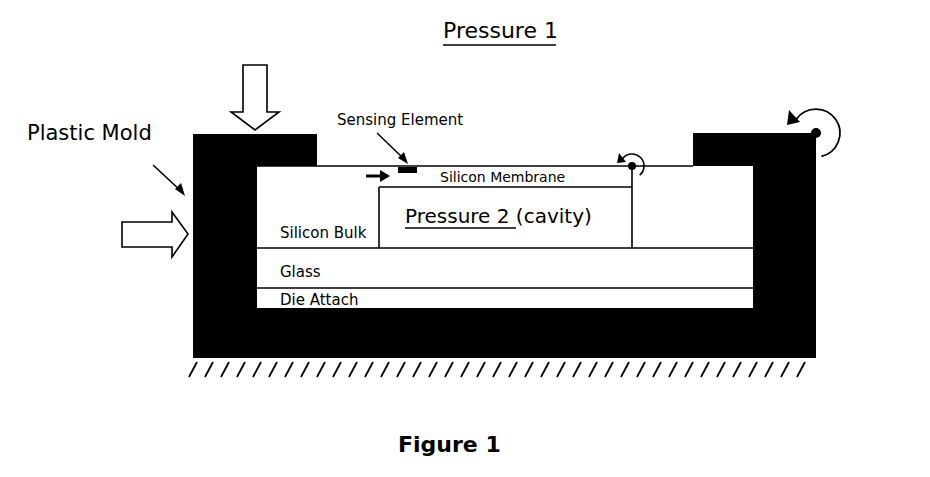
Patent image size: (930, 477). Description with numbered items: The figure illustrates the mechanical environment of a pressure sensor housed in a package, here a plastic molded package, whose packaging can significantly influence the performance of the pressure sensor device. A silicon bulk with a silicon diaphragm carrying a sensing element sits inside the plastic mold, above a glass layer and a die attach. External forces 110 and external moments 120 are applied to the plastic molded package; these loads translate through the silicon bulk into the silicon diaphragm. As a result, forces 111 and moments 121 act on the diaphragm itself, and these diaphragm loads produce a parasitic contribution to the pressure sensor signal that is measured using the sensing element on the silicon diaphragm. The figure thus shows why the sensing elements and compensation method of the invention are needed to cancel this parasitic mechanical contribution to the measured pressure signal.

The forces 110 is at (190, 174).
The forces applied to the diaphragm 111 is at (331, 181).
The moments 120 is at (826, 133).
The moments applied to the diaphragm 121 is at (632, 145).